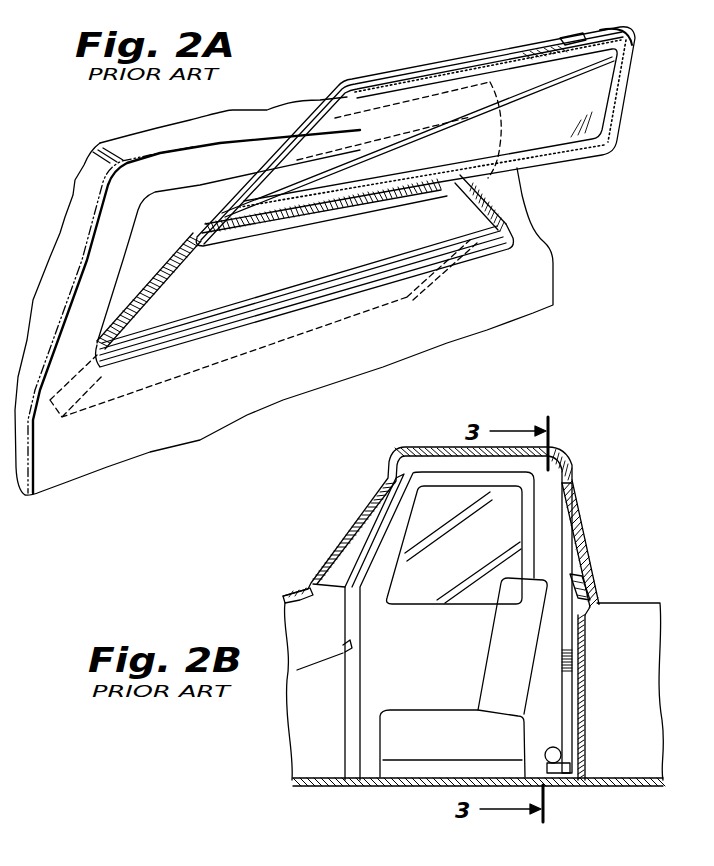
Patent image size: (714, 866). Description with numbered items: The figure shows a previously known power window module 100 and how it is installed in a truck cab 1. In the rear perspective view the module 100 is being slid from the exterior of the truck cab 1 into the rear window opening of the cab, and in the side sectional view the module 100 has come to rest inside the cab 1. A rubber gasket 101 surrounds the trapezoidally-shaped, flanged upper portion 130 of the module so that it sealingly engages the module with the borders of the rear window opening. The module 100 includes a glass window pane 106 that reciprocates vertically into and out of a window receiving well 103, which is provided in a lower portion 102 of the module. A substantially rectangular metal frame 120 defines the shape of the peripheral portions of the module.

In FIG. 2A, the truck cab 1 is at (548, 280).
In FIG. 2B, the truck cab 1 is at (392, 463).
In FIG. 2A, the power window module 100 is at (512, 42).
In FIG. 2B, the power window module 100 is at (593, 531).
In FIG. 2A, the rubber gasket 101 is at (619, 28).
In FIG. 2B, the rubber gasket 101 is at (578, 468).
In FIG. 2A, the lower portion 102 is at (408, 297).
In FIG. 2B, the lower portion 102 is at (568, 692).
In FIG. 2A, the window receiving well 103 is at (528, 124).
In FIG. 2A, the glass window pane 106 is at (568, 88).
In FIG. 2A, the metal frame 120 is at (163, 280).
In FIG. 2A, the flanged upper portion 130 is at (384, 194).
In FIG. 2B, the flanged upper portion 130 is at (572, 575).